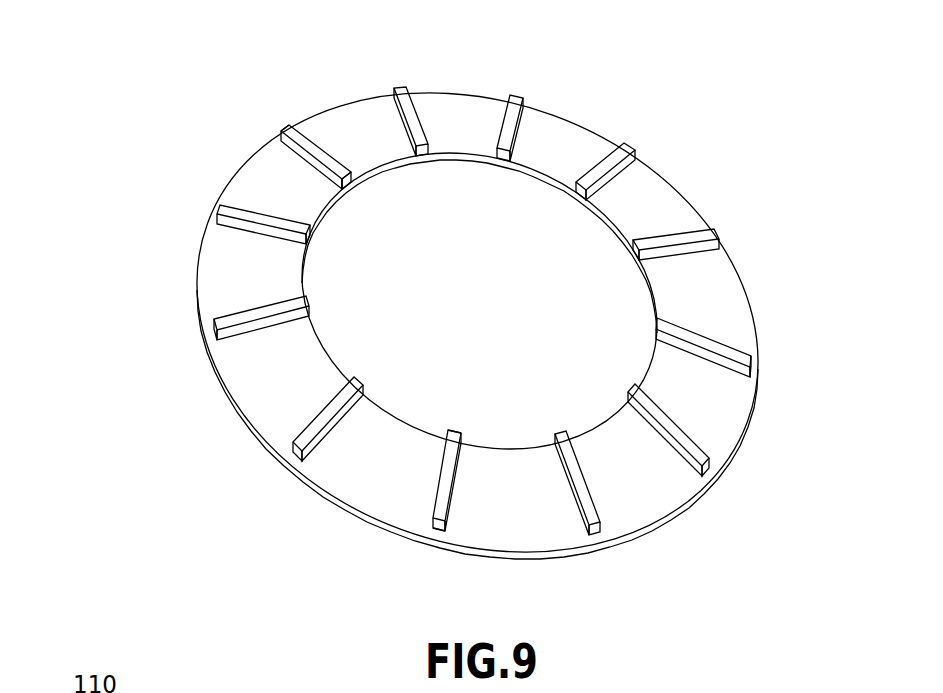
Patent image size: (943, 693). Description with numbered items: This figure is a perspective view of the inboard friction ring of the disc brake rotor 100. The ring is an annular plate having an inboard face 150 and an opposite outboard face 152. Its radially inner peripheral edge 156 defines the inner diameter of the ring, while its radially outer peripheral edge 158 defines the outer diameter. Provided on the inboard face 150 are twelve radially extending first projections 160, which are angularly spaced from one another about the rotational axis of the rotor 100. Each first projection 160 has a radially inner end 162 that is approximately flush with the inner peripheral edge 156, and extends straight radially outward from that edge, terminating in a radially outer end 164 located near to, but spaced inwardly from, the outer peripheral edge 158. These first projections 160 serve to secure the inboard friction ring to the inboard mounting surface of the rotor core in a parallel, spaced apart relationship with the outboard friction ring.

The disc brake rotor 100 is at (137, 127).
The inboard face 150 is at (365, 481).
The outboard face 152 is at (247, 428).
The radially inner peripheral edge 156 is at (458, 168).
The radially outer peripheral edge 158 is at (678, 196).
The first projections 160 is at (237, 312).
The radially inner end 162 is at (352, 173).
The radially outer end 164 is at (290, 122).